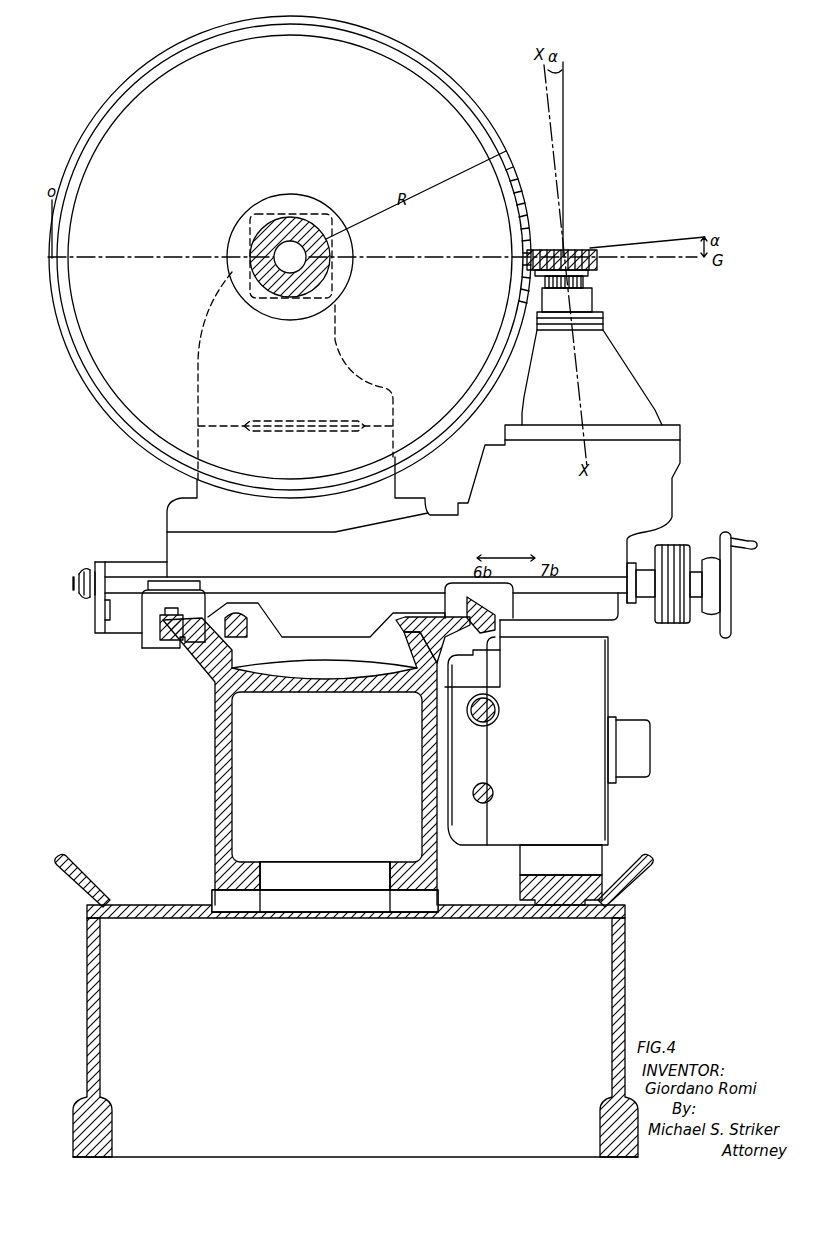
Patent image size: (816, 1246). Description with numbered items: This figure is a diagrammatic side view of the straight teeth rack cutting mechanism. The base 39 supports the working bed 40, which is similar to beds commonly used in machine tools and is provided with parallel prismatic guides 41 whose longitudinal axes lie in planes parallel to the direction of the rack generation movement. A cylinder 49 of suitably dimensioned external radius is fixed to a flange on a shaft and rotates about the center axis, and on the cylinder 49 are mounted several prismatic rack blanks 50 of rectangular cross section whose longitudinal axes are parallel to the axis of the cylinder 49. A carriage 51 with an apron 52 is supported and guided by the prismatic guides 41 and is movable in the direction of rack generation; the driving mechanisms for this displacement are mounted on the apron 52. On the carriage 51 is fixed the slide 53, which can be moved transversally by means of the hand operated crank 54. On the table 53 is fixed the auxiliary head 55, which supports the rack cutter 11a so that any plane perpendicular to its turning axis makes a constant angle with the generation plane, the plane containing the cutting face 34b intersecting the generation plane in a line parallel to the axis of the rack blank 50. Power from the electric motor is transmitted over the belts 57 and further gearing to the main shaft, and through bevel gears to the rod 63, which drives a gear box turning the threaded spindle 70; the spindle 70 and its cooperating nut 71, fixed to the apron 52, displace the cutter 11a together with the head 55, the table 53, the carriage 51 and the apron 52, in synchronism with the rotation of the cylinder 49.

The base 39 is at (95, 908).
The working bed 40 is at (216, 739).
The prismatic guides 41 is at (487, 616).
The cylinder 49 is at (483, 148).
The rack blanks 50 is at (527, 229).
The carriage 51 is at (503, 597).
The apron 52 is at (597, 808).
The slide 53 is at (677, 460).
The hand operated crank 54 is at (728, 638).
The auxiliary head 55 is at (638, 398).
The belts 57 is at (168, 544).
The rod 63 is at (495, 793).
The threaded spindle 70 is at (497, 712).
The nut 71 is at (499, 701).
The cutting face 34b is at (588, 250).
The rack cutter 11a is at (593, 268).